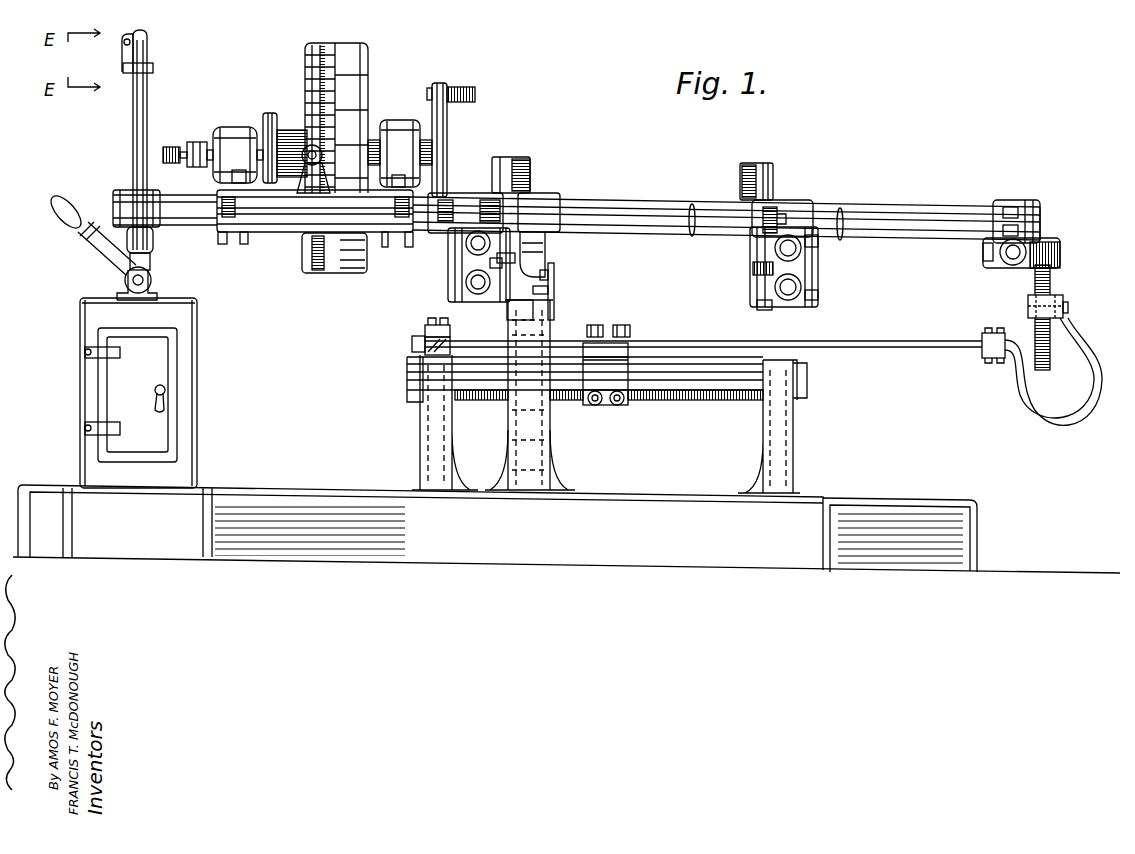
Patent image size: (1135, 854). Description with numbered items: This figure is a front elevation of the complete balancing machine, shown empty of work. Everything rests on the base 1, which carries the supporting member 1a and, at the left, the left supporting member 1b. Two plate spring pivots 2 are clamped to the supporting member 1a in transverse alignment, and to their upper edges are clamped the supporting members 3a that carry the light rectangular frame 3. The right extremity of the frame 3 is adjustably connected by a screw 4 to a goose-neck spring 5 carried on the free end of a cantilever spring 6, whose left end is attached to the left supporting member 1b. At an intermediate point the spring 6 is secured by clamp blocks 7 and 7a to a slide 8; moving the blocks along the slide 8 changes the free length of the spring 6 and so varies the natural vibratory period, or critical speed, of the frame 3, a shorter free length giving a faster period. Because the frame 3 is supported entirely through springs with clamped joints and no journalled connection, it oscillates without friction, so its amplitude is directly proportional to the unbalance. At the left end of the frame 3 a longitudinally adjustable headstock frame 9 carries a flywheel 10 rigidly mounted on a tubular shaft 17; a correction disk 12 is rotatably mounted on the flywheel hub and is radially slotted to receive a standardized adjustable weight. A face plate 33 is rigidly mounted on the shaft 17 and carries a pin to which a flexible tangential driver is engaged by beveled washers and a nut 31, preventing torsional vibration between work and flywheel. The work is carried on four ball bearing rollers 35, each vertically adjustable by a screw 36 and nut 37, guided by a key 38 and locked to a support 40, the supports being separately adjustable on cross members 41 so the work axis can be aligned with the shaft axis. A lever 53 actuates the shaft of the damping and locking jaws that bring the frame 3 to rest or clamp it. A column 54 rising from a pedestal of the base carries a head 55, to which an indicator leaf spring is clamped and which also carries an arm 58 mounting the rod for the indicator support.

The base 1 is at (566, 529).
The supporting member 1a is at (530, 395).
The left supporting member 1b is at (609, 405).
The plate spring pivot 2 is at (554, 283).
The rectangular frame 3 is at (175, 214).
The supporting members 3a is at (548, 255).
The screw 4 is at (1052, 283).
The goose-neck spring 5 is at (1100, 370).
The cantilever spring 6 is at (897, 344).
The clamp block 7 is at (605, 374).
The clamp block 7a is at (614, 330).
The slide 8 is at (585, 379).
The headstock frame 9 is at (315, 218).
The flywheel 10 is at (335, 158).
The correction disk 12 is at (310, 68).
The tubular shaft 17 is at (198, 145).
The nut 31 is at (478, 95).
The face plate 33 is at (447, 138).
The ball bearing roller 35 is at (528, 158).
The screw 36 is at (775, 215).
The nut 37 is at (760, 268).
The key 38 is at (780, 222).
The support 40 is at (456, 263).
The cross member 41 is at (789, 300).
The lever 53 is at (68, 222).
The column 54 is at (144, 112).
The head 55 is at (153, 70).
The arm 58 is at (122, 58).